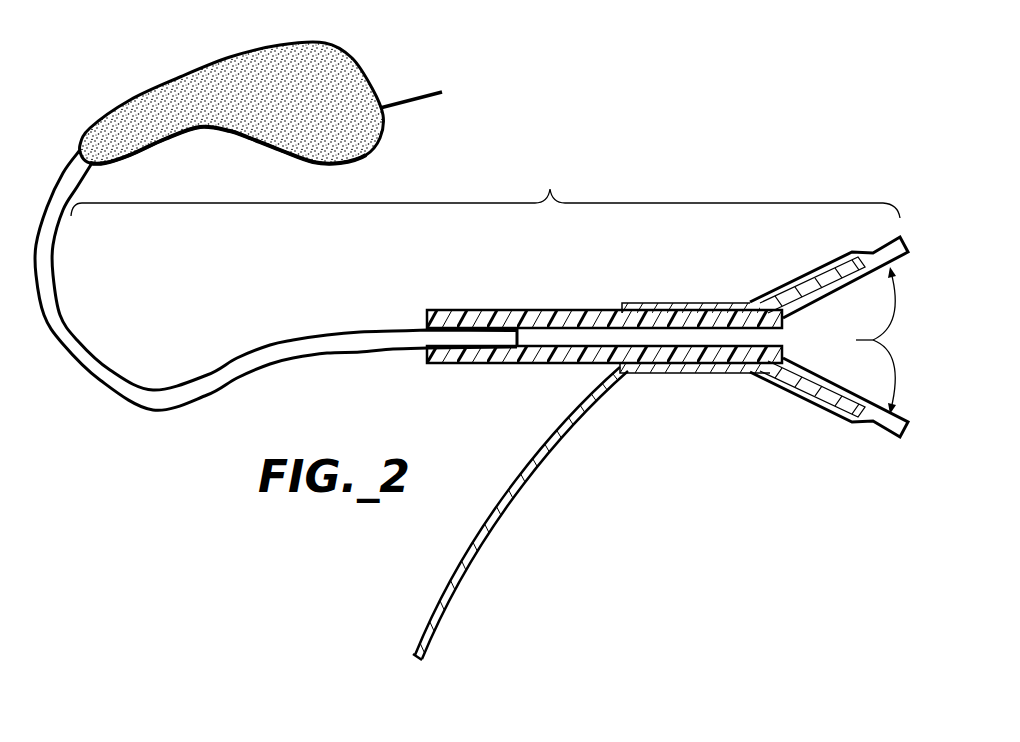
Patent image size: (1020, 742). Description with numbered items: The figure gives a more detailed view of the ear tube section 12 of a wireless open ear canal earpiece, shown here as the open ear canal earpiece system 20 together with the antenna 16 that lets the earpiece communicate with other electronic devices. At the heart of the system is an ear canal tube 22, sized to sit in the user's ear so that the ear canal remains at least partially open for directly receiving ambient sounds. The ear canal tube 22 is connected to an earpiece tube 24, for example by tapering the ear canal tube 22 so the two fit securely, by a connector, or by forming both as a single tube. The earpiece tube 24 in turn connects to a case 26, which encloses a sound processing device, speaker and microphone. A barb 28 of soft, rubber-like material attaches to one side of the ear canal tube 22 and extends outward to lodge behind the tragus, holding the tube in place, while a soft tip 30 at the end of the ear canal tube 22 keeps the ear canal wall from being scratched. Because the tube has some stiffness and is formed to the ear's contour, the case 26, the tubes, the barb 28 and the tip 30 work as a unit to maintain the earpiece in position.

The ear tube 12 is at (485, 193).
The antenna 16 is at (404, 108).
The open ear canal earpiece system 20 is at (699, 108).
The ear canal tube 22 is at (548, 306).
The earpiece tube 24 is at (107, 368).
The case 26 is at (363, 160).
The barb 28 is at (511, 501).
The tip 30 is at (862, 340).